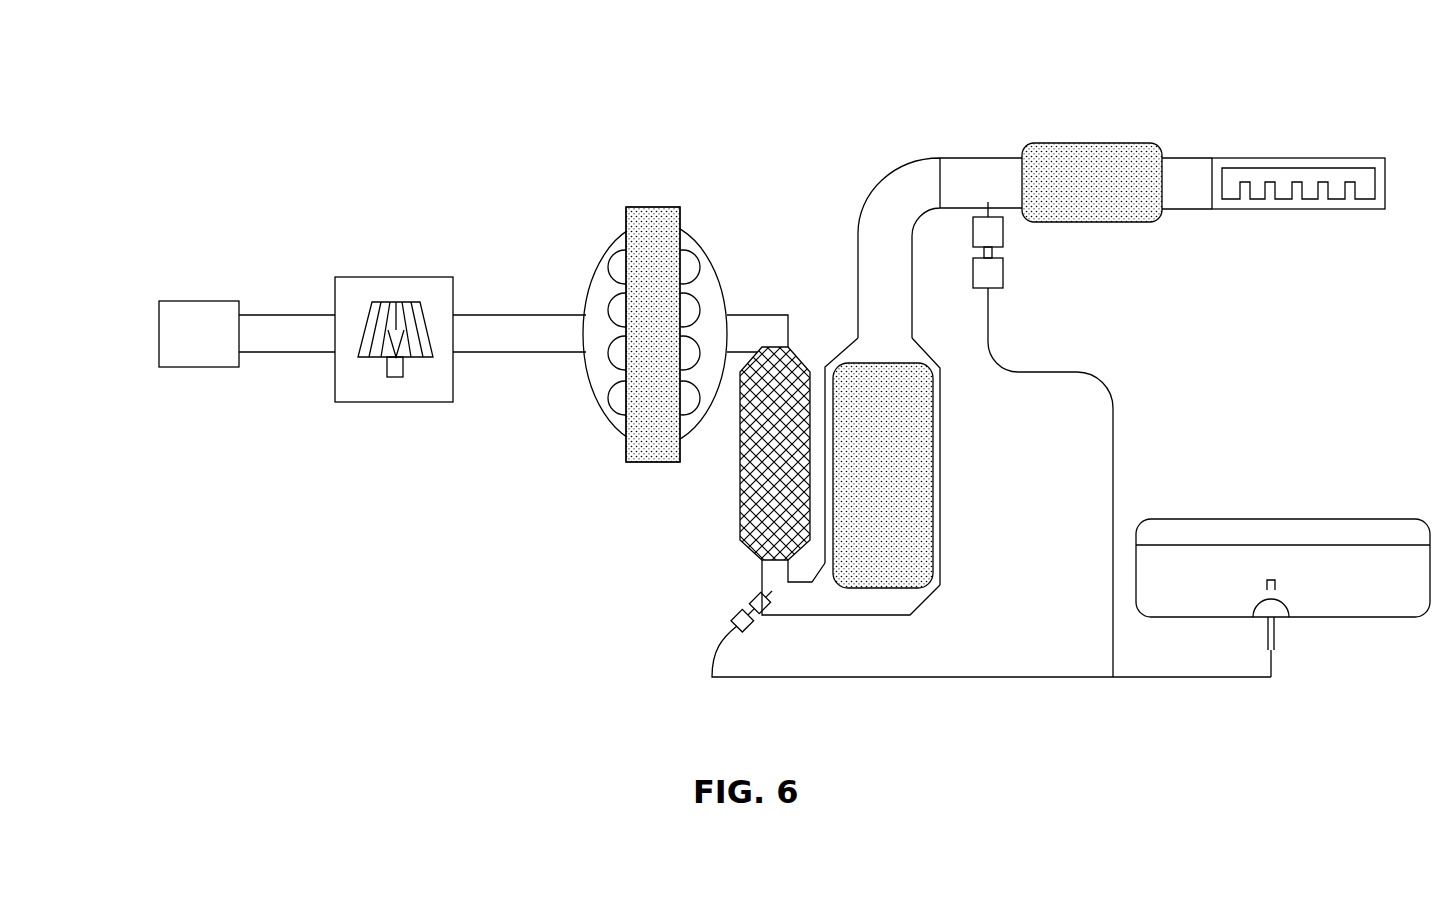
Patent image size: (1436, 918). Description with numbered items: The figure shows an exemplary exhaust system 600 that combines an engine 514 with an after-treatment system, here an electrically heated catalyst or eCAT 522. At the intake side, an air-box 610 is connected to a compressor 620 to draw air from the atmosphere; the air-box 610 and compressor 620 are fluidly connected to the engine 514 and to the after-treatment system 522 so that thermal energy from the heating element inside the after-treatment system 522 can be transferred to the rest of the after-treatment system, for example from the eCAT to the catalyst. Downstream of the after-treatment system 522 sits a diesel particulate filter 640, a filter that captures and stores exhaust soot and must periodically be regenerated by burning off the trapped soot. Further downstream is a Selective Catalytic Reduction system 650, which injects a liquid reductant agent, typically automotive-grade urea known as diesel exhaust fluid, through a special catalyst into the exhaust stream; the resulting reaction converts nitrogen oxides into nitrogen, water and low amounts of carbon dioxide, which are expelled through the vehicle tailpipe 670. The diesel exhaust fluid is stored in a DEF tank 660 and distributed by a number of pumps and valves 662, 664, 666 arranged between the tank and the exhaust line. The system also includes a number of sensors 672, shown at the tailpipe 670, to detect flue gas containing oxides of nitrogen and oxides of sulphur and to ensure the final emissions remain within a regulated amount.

The exhaust system 600 is at (166, 76).
The air-box 610 is at (229, 300).
The compressor 620 is at (410, 276).
The engine 514 is at (654, 206).
The after-treatment system (eCAT) 522 is at (736, 500).
The diesel particulate filter 640 is at (943, 545).
The Selective Catalytic Reduction system 650 is at (1081, 142).
The tailpipe 670 is at (1319, 201).
The sensors 672 is at (1357, 223).
The pump/valve 664 is at (1006, 233).
The pump/valve 662 is at (746, 628).
The DEF tank 660 is at (1356, 519).
The pump/valve 666 is at (1291, 617).